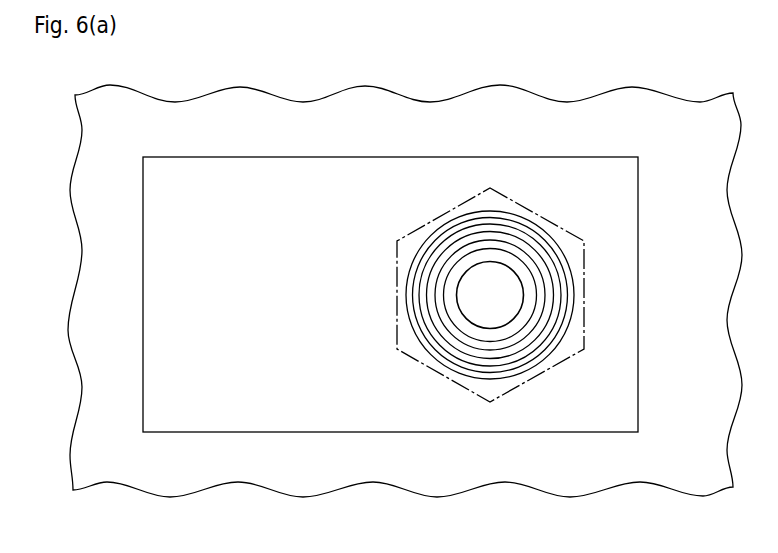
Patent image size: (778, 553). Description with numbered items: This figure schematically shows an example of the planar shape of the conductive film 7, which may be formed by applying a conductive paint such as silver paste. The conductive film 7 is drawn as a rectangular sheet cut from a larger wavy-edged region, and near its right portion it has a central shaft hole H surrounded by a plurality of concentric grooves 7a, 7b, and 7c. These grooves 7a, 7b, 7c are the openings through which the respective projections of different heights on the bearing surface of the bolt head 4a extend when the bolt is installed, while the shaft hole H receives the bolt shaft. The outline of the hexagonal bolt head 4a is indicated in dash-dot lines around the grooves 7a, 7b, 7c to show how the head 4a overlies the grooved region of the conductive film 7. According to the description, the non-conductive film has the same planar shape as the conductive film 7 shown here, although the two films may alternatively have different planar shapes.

The conductive film 7 is at (360, 157).
The groove 7a is at (538, 291).
The groove 7b is at (530, 243).
The groove 7c is at (488, 212).
The head 4a is at (458, 385).
The shaft hole H is at (503, 303).